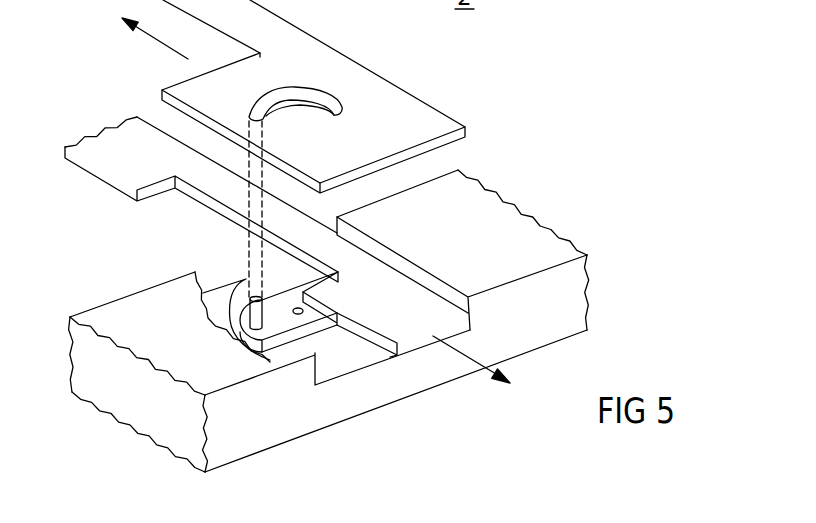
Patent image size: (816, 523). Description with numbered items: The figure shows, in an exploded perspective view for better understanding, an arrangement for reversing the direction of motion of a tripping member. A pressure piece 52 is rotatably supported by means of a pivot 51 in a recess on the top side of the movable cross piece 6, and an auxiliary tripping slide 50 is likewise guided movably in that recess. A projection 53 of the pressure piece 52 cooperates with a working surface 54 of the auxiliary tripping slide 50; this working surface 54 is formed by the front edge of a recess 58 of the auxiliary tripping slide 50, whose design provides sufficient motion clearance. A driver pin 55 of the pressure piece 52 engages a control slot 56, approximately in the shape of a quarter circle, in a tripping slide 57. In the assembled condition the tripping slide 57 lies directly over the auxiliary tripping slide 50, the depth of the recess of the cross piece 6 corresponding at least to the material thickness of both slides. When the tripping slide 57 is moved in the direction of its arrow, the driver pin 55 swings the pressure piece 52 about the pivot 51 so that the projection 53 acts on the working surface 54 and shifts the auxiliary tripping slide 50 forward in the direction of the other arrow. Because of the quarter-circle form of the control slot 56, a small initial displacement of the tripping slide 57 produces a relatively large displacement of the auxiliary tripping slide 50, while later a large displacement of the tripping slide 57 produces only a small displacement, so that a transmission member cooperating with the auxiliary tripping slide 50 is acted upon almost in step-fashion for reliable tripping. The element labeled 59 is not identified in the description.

The movable cross piece 6 is at (377, 408).
The auxiliary tripping slide 50 is at (95, 177).
The pivot 51 is at (301, 315).
The pressure piece 52 is at (238, 279).
The projection 53 is at (340, 273).
The working surface 54 is at (324, 282).
The driver pin 55 is at (263, 311).
The control slot 56 is at (334, 106).
The tripping slide 57 is at (480, 110).
The recess 58 is at (206, 198).
The guide block 59 is at (573, 298).